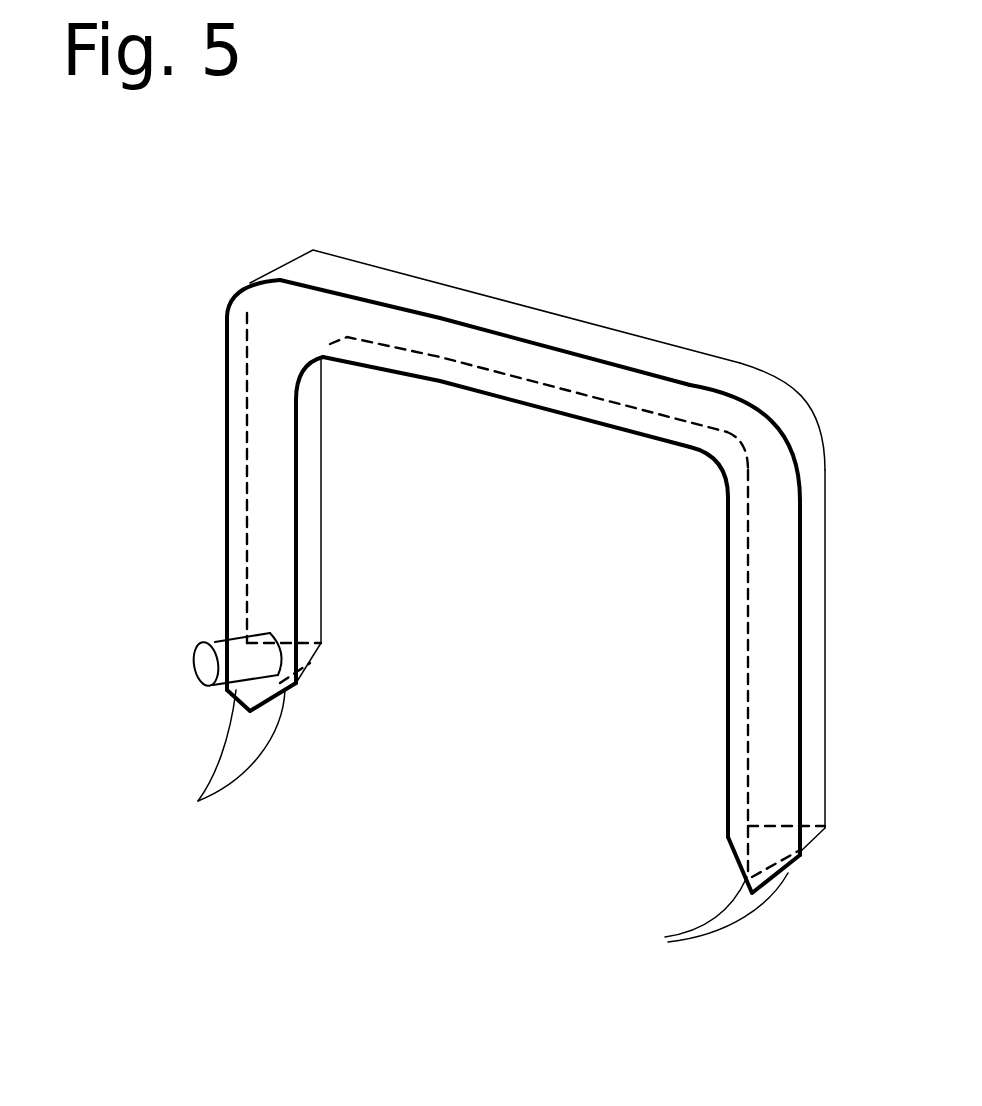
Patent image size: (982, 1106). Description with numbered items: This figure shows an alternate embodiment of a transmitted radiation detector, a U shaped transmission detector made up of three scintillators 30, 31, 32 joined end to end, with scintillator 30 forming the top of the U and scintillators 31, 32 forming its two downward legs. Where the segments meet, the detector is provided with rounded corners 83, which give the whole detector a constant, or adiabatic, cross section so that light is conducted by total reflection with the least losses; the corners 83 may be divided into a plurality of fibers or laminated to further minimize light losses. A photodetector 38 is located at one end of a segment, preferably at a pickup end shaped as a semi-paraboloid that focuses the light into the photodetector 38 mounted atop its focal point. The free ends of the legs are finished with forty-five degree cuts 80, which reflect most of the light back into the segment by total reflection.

The scintillator 30 is at (467, 323).
The scintillator 31 is at (265, 432).
The scintillator 32 is at (772, 675).
The photodetector 38 is at (203, 663).
The 45 degree cut 80 is at (302, 665).
The rounded corner 83 is at (290, 272).